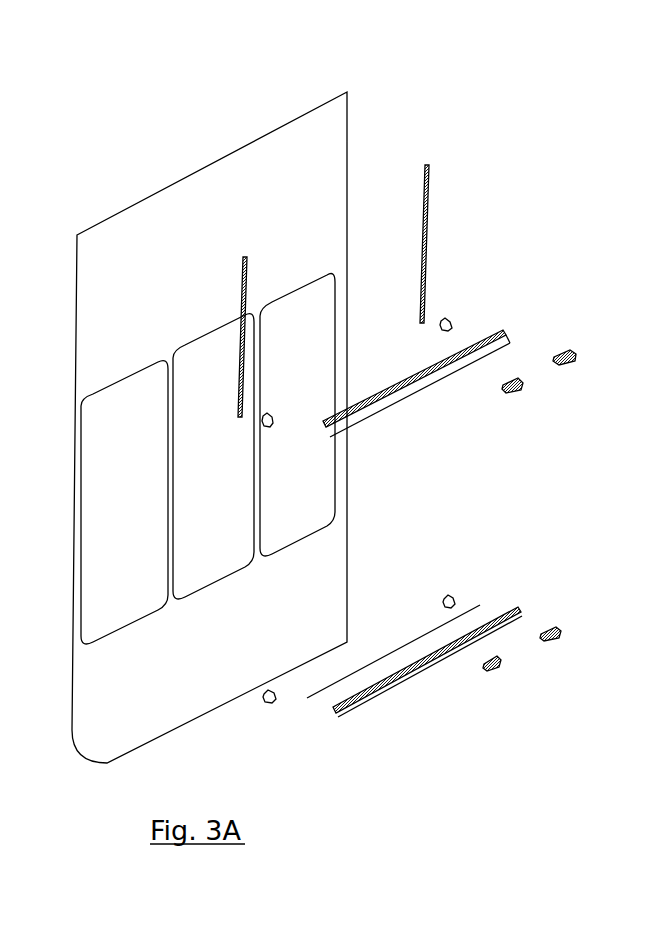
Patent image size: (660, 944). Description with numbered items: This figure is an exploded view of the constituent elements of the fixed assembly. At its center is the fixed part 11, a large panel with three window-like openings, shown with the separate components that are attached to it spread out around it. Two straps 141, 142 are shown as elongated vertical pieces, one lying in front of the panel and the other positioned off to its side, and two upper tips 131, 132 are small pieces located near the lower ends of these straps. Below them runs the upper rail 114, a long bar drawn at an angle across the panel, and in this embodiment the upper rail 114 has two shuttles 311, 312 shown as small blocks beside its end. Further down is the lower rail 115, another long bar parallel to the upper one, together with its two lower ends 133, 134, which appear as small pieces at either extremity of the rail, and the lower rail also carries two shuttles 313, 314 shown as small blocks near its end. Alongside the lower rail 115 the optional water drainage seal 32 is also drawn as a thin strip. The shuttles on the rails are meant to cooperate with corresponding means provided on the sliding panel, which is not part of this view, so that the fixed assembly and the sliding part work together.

The fixed part 11 is at (153, 183).
The strap 141 is at (247, 262).
The strap 142 is at (426, 267).
The upper tip 131 is at (270, 418).
The upper tip 132 is at (449, 322).
The upper rail 114 is at (501, 330).
The shuttle 311 is at (518, 379).
The shuttle 312 is at (571, 351).
The lower end 133 is at (276, 694).
The lower end 134 is at (450, 600).
The water drainage seal 32 is at (480, 605).
The lower rail 115 is at (514, 606).
The shuttle 313 is at (498, 658).
The shuttle 314 is at (558, 632).